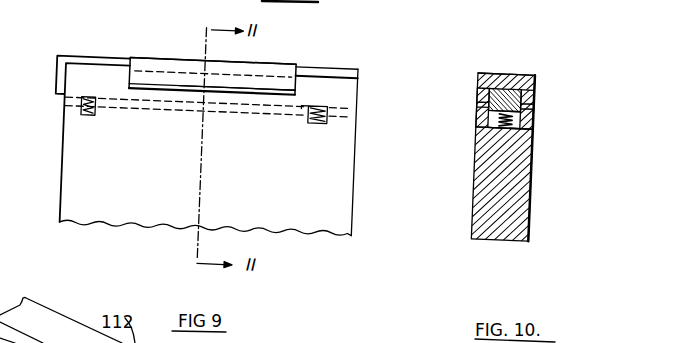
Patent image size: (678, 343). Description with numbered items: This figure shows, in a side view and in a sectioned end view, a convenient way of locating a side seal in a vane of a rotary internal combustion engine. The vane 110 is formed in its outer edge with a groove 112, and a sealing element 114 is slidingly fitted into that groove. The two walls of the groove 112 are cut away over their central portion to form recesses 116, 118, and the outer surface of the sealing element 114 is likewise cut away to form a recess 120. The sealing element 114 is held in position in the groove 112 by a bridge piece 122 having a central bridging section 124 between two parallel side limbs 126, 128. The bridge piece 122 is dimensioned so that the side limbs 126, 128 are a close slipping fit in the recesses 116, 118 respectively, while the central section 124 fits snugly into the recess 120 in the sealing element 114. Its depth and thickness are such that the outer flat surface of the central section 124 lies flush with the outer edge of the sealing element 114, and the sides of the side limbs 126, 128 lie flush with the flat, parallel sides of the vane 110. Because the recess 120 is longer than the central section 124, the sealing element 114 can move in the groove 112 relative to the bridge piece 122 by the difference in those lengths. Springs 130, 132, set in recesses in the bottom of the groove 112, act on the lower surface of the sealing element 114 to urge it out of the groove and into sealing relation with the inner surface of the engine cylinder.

In FIG. 9, the vane 110 is at (80, 188).
In FIG. 10, the vane 110 is at (531, 176).
In FIG. 9, the groove 112 is at (329, 105).
In FIG. 10, the groove 112 is at (537, 125).
In FIG. 9, the sealing element 114 is at (332, 58).
In FIG. 9, the recess 116 is at (168, 81).
In FIG. 10, the recess 116 is at (536, 100).
In FIG. 10, the recess 118 is at (491, 104).
In FIG. 9, the recess 120 is at (151, 68).
In FIG. 9, the bridge piece 122 is at (271, 53).
In FIG. 10, the bridge piece 122 is at (531, 71).
In FIG. 10, the central bridging section 124 is at (508, 73).
In FIG. 9, the side limb 126 is at (234, 81).
In FIG. 10, the side limb 126 is at (523, 90).
In FIG. 10, the side limb 128 is at (490, 90).
In FIG. 9, the spring 130 is at (86, 114).
In FIG. 9, the spring 132 is at (325, 112).
In FIG. 10, the spring 132 is at (479, 130).